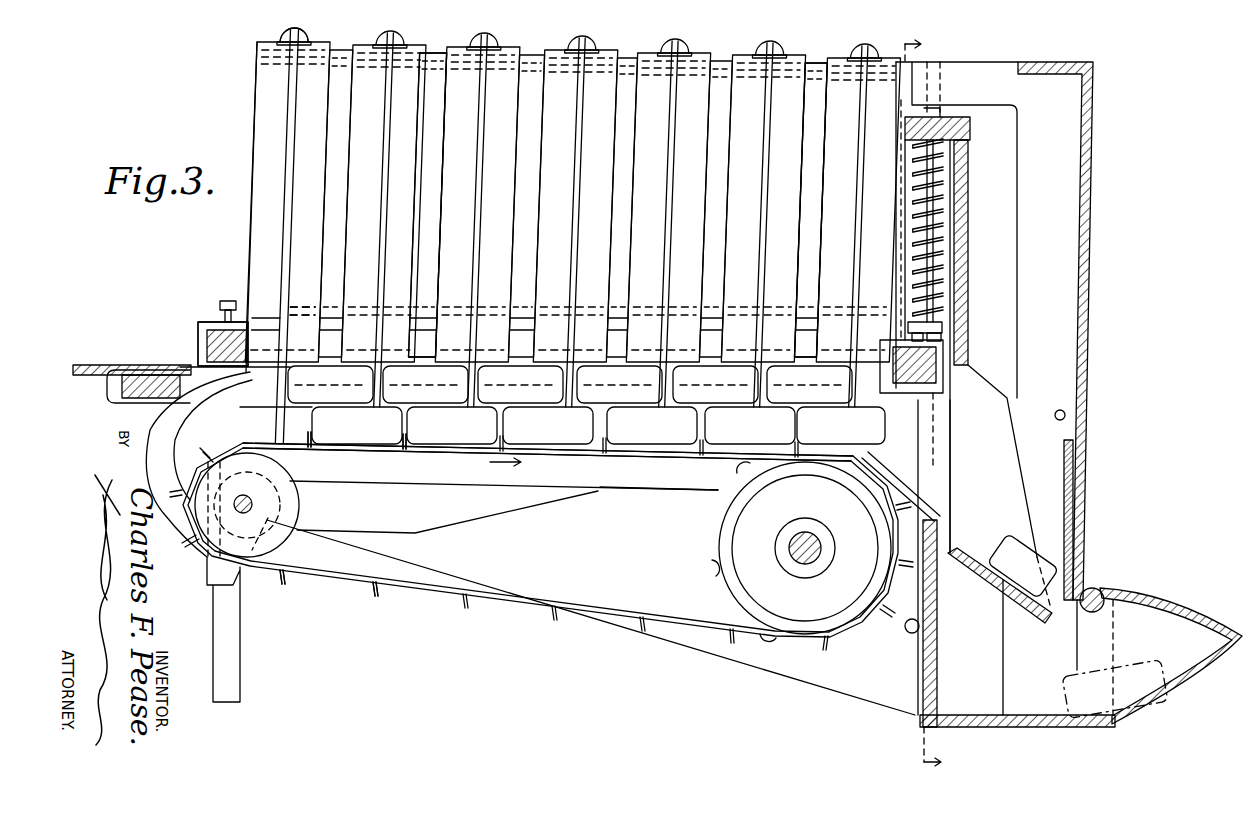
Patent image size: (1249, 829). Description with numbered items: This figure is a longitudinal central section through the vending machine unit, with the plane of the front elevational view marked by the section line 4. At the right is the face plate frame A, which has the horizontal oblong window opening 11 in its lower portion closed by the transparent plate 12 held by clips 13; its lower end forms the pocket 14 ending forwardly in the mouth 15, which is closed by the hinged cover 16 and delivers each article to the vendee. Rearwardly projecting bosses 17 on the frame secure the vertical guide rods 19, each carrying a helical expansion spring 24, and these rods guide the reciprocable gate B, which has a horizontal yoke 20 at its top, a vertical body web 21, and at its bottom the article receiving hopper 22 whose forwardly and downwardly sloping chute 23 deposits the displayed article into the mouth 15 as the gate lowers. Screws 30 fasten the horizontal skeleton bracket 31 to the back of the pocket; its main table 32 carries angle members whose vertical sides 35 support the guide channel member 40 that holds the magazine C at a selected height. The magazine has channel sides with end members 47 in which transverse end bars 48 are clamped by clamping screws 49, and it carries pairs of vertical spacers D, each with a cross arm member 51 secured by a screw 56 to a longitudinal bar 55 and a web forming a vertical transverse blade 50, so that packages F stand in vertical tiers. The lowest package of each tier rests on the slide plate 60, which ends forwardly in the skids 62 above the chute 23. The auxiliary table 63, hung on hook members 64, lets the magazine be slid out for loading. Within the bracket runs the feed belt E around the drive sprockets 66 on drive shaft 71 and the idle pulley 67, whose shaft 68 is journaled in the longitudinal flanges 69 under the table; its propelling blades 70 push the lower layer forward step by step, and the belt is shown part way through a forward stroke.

The window opening 11 is at (1078, 456).
The transparent plate 12 is at (1076, 516).
The clips 13 is at (1063, 441).
The pocket 14 is at (1017, 623).
The mouth 15 is at (1190, 672).
The hinged cover 16 is at (1106, 596).
The rearwardly projecting bosses 17 is at (977, 63).
The guide rods 19 is at (946, 176).
The horizontal yoke 20 is at (970, 130).
The vertical body web 21 is at (968, 300).
The article receiving hopper 22 is at (971, 476).
The chute 23 is at (1000, 585).
The helical expansion spring 24 is at (960, 236).
The screws 30 is at (920, 628).
The skeleton bracket 31 is at (591, 617).
The main table 32 is at (686, 484).
The vertical sides 35 is at (280, 411).
The guide channel member 40 is at (330, 322).
The end members 47 is at (198, 336).
The transverse end bars 48 is at (207, 354).
The clamping screws 49 is at (227, 301).
The vertical transverse blade 50 is at (288, 210).
The cross arm member 51 is at (256, 122).
The longitudinal bar 55 is at (812, 62).
The screw 56 is at (301, 33).
The slide plate 60 is at (260, 446).
The skids 62 is at (897, 468).
The auxiliary table 63 is at (95, 364).
The hook members 64 is at (116, 400).
The drive sprockets 66 is at (718, 549).
The idle pulley 67 is at (290, 477).
The shaft 68 is at (252, 503).
The longitudinal flanges 69 is at (504, 507).
The propelling blades 70 is at (410, 444).
The drive shaft 71 is at (816, 538).
The face plate frame A is at (1091, 220).
The reciprocable gate B is at (968, 258).
The magazine C is at (206, 322).
The vertical spacers D is at (418, 55).
The feed belt E is at (404, 602).
The packages F is at (1095, 543).
The section line 4- 4 is at (913, 399).